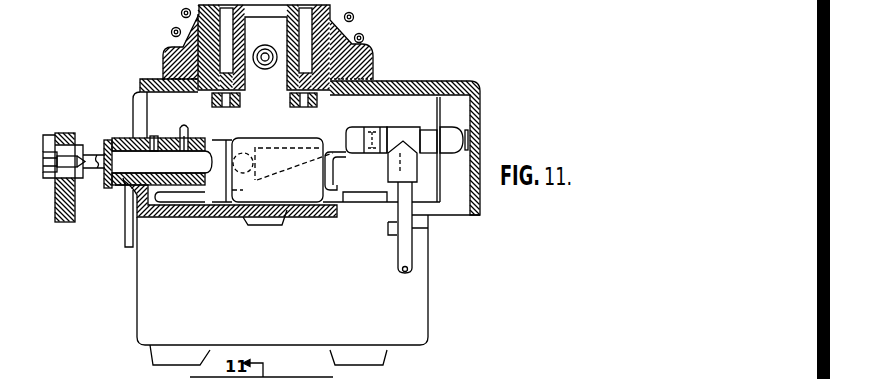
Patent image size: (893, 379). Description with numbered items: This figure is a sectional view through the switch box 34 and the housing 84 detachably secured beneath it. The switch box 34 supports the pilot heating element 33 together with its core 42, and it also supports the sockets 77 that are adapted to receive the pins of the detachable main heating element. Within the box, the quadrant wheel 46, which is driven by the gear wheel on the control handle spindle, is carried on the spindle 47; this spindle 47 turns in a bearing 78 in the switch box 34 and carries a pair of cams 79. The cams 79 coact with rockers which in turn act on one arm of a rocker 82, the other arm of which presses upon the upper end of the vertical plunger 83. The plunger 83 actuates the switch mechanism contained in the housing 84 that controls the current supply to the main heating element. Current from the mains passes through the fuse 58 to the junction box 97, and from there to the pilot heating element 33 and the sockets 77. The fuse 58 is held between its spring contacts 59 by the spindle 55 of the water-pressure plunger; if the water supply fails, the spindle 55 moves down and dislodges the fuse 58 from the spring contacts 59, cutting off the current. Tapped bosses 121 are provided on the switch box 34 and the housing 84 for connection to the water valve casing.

The pilot heating element 33 is at (172, 29).
The switch box 34 is at (481, 105).
The core 42 is at (164, 62).
The quadrant wheel 46 is at (55, 205).
The spindle 47 is at (122, 161).
The spindle 55 is at (408, 243).
The fuse 58 is at (448, 128).
The spring contacts 59 is at (352, 140).
The sockets 77 is at (222, 43).
The bearing 78 is at (131, 142).
The cams 79 is at (160, 140).
The rocker 82 is at (223, 146).
The plunger 83 is at (382, 165).
The housing 84 is at (420, 302).
The junction box 97 is at (307, 190).
The tapped bosses 121 is at (160, 354).